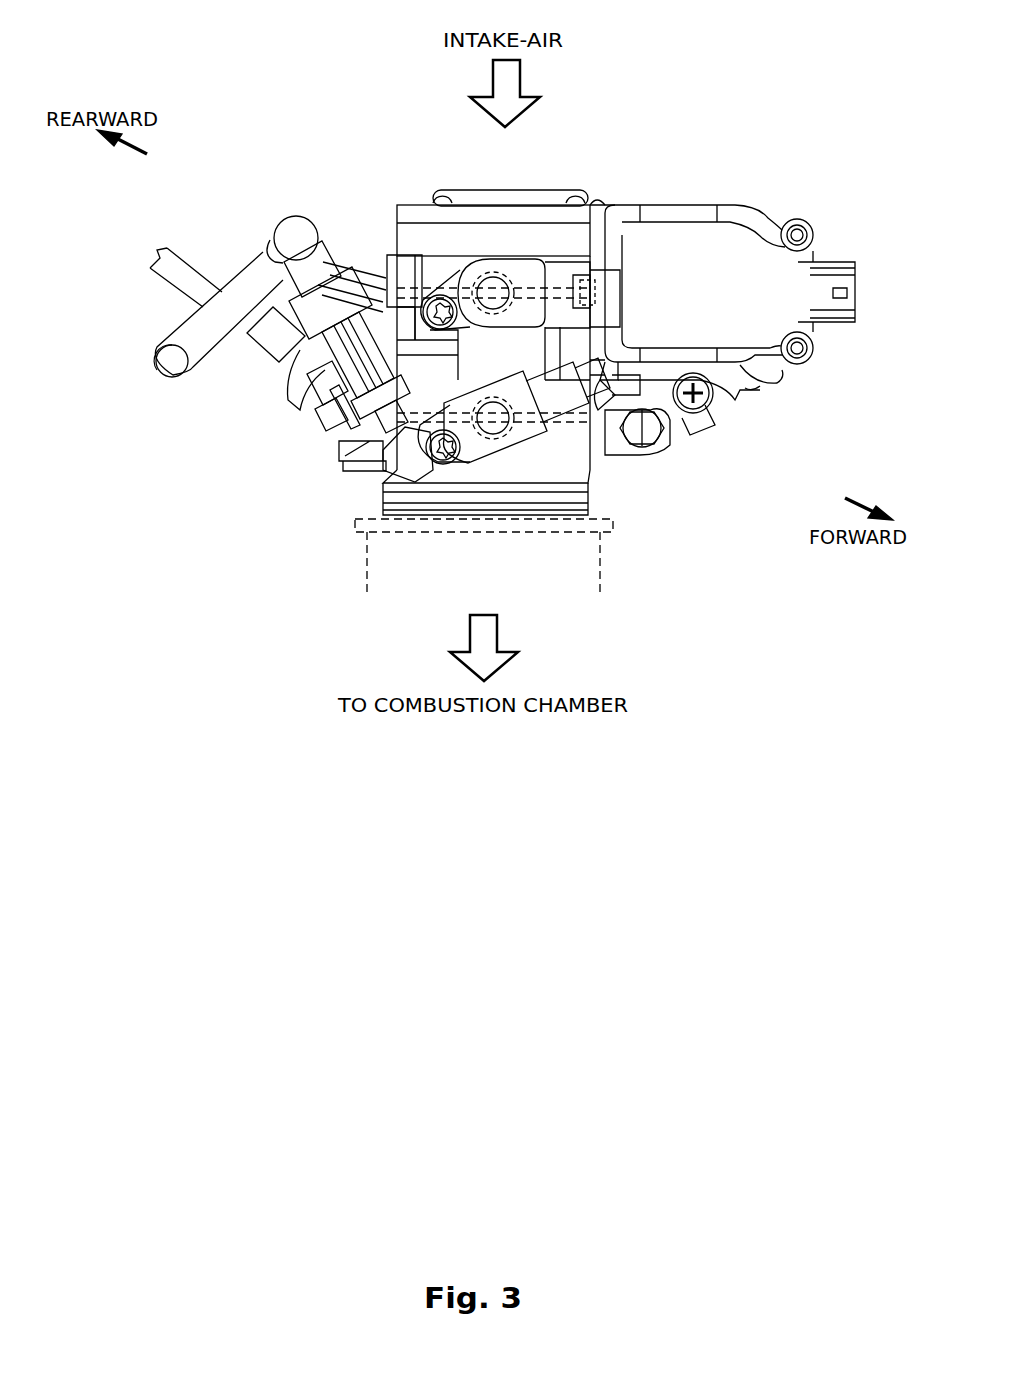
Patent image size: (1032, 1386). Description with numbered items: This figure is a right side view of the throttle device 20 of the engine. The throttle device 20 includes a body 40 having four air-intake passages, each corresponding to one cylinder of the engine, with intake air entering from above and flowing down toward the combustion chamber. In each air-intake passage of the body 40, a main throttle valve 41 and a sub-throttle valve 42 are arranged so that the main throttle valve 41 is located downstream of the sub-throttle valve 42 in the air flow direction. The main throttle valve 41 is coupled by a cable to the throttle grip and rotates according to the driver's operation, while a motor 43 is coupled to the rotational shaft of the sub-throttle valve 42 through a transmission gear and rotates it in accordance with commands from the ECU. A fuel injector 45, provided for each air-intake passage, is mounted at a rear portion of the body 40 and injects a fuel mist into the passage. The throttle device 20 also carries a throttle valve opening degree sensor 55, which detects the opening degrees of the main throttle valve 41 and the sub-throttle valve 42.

The throttle device 20 is at (247, 178).
The body 40 is at (397, 190).
The main throttle valve 41 is at (607, 445).
The sub-throttle valve 42 is at (565, 283).
The motor 43 is at (778, 218).
The fuel injector 45 is at (338, 363).
The throttle valve opening degree sensor 55 is at (521, 267).